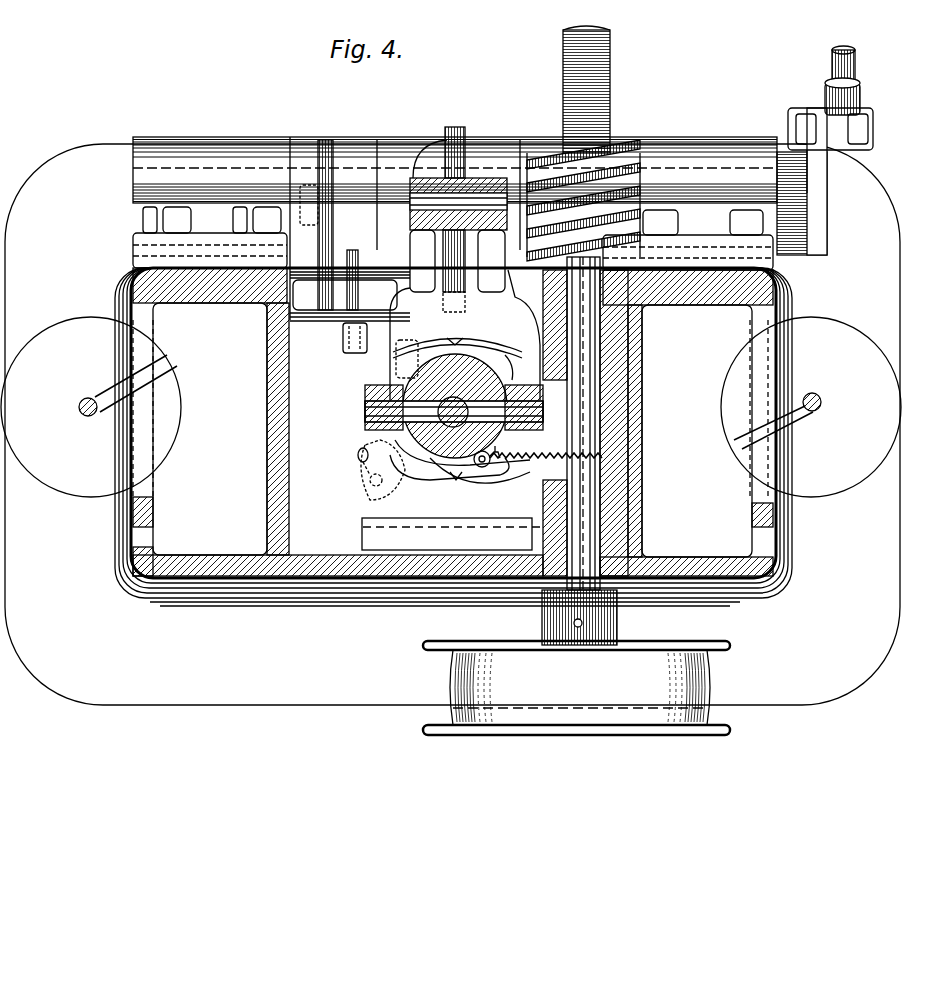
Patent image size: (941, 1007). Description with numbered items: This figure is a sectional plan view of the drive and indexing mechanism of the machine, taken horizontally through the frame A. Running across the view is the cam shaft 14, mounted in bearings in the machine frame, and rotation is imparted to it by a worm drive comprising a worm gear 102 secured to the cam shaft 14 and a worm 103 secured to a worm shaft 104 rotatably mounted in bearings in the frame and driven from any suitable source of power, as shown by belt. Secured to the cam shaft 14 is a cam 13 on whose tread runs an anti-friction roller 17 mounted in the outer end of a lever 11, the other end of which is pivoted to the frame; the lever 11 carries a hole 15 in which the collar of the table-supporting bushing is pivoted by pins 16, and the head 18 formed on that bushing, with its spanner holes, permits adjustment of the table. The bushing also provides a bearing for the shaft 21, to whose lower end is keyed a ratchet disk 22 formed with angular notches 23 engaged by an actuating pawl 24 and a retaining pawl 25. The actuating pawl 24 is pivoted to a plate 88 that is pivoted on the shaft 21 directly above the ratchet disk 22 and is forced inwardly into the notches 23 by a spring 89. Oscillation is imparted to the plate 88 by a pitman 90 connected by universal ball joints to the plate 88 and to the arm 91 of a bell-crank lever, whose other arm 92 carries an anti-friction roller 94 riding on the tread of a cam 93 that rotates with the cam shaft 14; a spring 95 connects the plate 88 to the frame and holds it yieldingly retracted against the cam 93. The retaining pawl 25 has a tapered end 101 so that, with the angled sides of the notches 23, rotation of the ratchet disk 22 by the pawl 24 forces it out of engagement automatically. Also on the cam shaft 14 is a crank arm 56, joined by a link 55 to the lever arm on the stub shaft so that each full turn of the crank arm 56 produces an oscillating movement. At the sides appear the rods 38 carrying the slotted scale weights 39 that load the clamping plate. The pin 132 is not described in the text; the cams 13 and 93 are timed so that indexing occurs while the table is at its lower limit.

The frame A is at (452, 399).
The lever 11 is at (500, 312).
The cam 13 is at (468, 290).
The pin head 132 is at (458, 127).
The cam shaft 14 is at (222, 176).
The hole 15 is at (427, 340).
The pins 16 is at (365, 411).
The anti-friction roller 17 is at (482, 178).
The head 18 is at (505, 460).
The shaft 21 is at (538, 400).
The ratchet disk 22 is at (508, 362).
The angular notches 23 is at (460, 345).
The actuating pawl 24 is at (395, 470).
The retaining pawl 25 is at (470, 478).
The rods 38 is at (86, 414).
The weights 39 is at (73, 490).
The link 55 is at (832, 70).
The crank arm 56 is at (820, 165).
The plate 88 is at (425, 462).
The spring 89 is at (360, 453).
The pitman 90 is at (410, 355).
The arm of bell-crank lever 91 is at (343, 344).
The arm of bell-crank lever 92 is at (358, 263).
The cam 93 is at (336, 176).
The anti-friction roller 94 is at (318, 192).
The spring 95 is at (488, 465).
The tapered end 101 is at (500, 470).
The worm gear 102 is at (600, 117).
The worm 103 is at (640, 180).
The worm shaft 104 is at (590, 406).